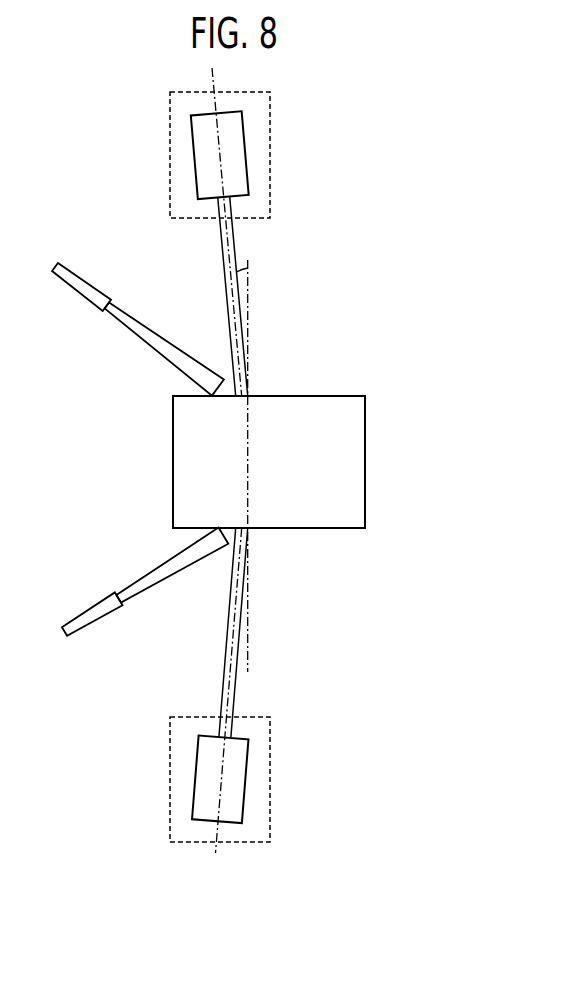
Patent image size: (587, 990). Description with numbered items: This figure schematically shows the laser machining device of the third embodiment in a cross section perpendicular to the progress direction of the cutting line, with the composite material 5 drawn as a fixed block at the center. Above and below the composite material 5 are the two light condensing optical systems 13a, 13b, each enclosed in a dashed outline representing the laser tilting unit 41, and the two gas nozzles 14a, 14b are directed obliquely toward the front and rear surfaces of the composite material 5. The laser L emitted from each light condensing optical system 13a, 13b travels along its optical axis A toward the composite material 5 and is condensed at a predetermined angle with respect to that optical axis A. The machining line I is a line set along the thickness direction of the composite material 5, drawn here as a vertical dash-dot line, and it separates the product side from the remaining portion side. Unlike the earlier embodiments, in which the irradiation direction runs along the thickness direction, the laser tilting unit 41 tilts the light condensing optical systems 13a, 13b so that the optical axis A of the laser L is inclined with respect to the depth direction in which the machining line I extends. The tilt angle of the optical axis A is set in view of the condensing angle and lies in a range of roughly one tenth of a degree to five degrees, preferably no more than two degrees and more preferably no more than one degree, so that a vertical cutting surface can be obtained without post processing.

The composite material 5 is at (365, 462).
The light condensing optical system 13a is at (246, 780).
The light condensing optical system 13b is at (248, 150).
The gas nozzle 14a is at (80, 617).
The gas nozzle 14b is at (90, 284).
The laser tilting unit 41 is at (170, 152).
The optical axis A is at (214, 74).
The laser L is at (235, 690).
The machining line I is at (249, 300).